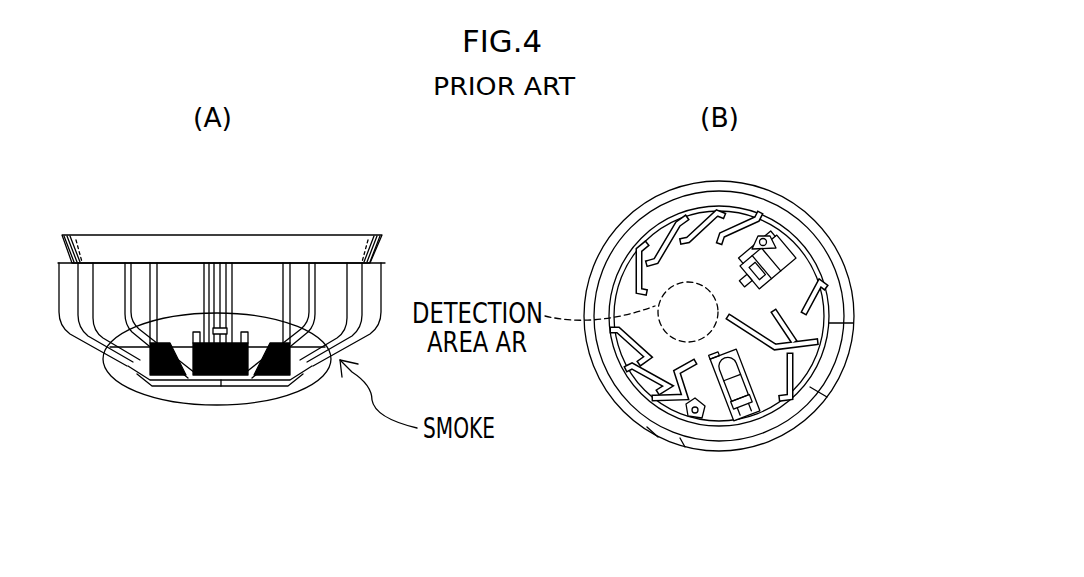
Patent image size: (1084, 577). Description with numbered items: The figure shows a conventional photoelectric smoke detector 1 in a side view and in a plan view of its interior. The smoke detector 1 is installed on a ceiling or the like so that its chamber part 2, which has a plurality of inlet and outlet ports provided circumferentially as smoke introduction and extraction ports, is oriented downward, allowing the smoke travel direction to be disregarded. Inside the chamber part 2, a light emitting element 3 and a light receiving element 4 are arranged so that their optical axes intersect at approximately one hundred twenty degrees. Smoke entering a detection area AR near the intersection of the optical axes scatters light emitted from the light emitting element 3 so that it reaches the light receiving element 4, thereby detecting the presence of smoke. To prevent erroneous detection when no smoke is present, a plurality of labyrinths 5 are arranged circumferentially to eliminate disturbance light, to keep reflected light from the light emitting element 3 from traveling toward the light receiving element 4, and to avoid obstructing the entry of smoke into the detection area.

The photoelectric smoke detector 1 is at (211, 247).
The chamber part 2 is at (158, 398).
The light emitting element 3 is at (733, 385).
The light receiving element 4 is at (786, 245).
The labyrinths 5 is at (663, 247).